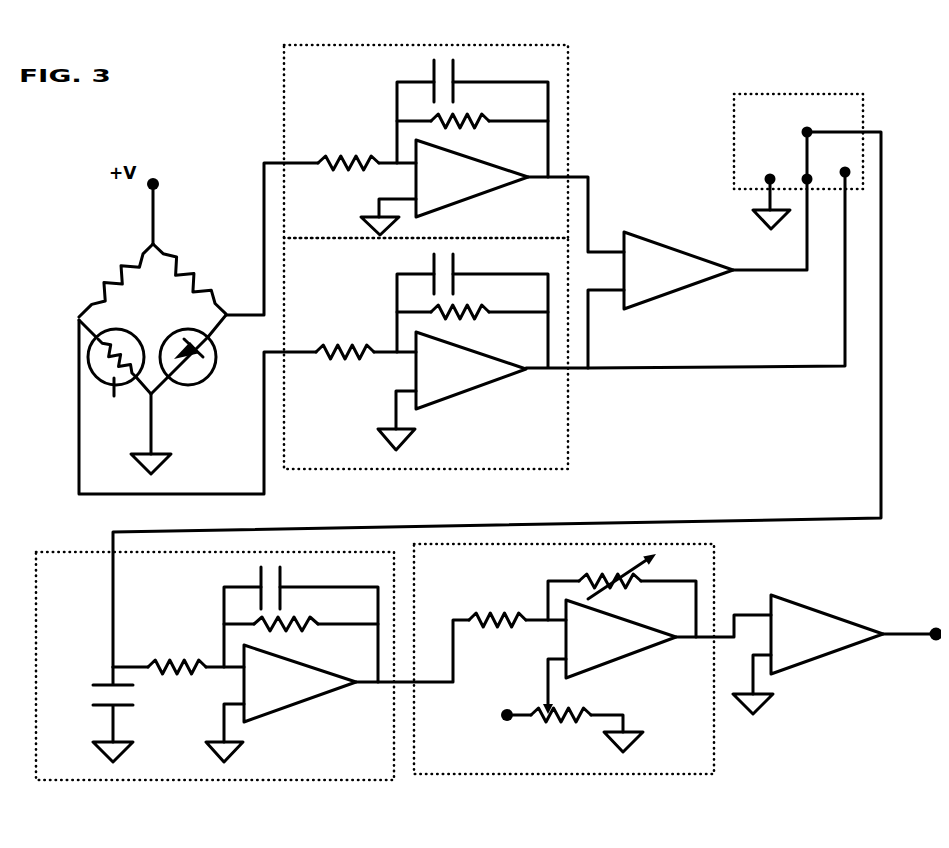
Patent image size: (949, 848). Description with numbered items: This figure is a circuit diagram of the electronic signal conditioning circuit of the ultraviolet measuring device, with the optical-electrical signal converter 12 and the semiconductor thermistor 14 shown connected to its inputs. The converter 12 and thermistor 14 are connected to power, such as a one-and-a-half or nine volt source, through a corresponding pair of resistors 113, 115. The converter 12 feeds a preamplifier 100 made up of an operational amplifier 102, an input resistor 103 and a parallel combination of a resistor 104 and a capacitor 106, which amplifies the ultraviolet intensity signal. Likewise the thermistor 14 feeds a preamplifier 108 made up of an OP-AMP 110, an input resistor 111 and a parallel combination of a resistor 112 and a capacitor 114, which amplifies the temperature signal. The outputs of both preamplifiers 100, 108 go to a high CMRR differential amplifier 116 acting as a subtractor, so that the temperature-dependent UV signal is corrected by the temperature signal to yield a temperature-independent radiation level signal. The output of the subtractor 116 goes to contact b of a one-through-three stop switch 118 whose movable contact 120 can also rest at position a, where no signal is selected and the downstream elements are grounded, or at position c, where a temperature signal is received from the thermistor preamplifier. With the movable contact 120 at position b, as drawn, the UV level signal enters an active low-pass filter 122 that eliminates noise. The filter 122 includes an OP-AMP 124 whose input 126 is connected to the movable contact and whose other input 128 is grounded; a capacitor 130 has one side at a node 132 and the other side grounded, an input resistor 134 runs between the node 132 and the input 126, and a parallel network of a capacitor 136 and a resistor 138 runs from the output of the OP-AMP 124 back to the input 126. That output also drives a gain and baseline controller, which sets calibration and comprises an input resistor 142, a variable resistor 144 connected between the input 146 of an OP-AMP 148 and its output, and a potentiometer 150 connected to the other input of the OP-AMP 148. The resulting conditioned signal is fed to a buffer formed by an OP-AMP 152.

The optical-electrical signal converter 12 is at (192, 370).
The semiconductor thermistor 14 is at (116, 375).
The resistor 113 is at (207, 280).
The resistor 115 is at (98, 280).
The preamplifier 100 is at (568, 135).
The operational amplifier 102 is at (472, 178).
The input resistor 103 is at (345, 146).
The resistor 104 is at (474, 111).
The capacitor 106 is at (466, 79).
The preamplifier 108 is at (567, 383).
The OP-AMP 110 is at (471, 370).
The input resistor 111 is at (343, 363).
The resistor 112 is at (466, 299).
The capacitor 114 is at (467, 271).
The differential amplifier 116 is at (678, 270).
The one-through-three stop switch 118 is at (770, 161).
The movable contact 120 is at (803, 146).
The low-pass filter 122 is at (215, 678).
The OP-AMP 124 is at (300, 683).
The input 126 is at (220, 660).
The input 128 is at (209, 728).
The capacitor 130 is at (90, 714).
The node 132 is at (108, 664).
The input resistor 134 is at (160, 663).
The capacitor 136 is at (293, 585).
The resistor 138 is at (299, 616).
The input resistor 142 is at (477, 612).
The variable resistor 144 is at (585, 570).
The input 146 is at (537, 628).
The OP-AMP 148 is at (621, 639).
The potentiometer 150 is at (555, 705).
The OP-AMP 152 is at (837, 654).